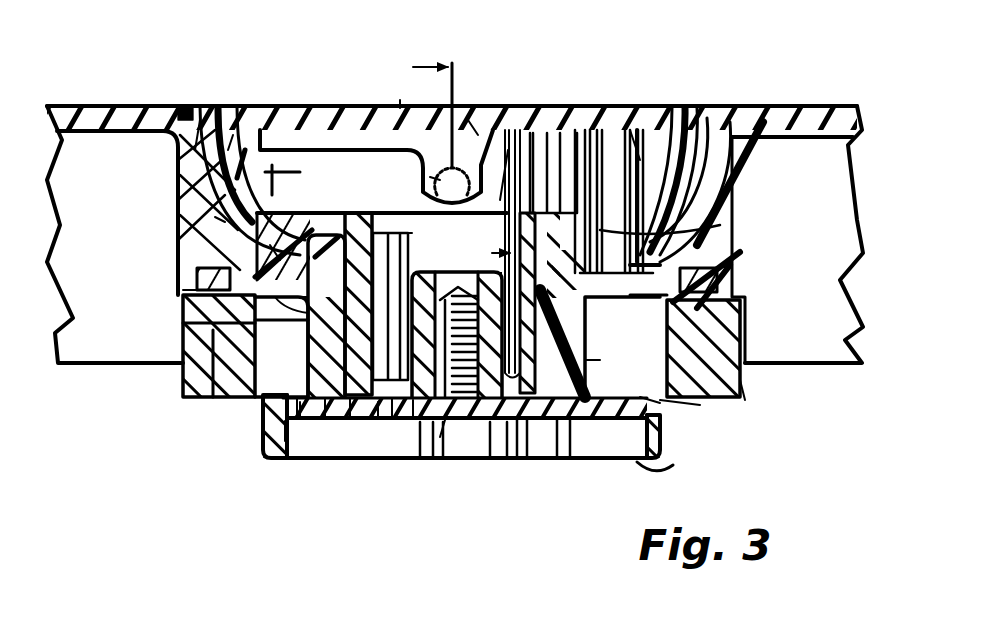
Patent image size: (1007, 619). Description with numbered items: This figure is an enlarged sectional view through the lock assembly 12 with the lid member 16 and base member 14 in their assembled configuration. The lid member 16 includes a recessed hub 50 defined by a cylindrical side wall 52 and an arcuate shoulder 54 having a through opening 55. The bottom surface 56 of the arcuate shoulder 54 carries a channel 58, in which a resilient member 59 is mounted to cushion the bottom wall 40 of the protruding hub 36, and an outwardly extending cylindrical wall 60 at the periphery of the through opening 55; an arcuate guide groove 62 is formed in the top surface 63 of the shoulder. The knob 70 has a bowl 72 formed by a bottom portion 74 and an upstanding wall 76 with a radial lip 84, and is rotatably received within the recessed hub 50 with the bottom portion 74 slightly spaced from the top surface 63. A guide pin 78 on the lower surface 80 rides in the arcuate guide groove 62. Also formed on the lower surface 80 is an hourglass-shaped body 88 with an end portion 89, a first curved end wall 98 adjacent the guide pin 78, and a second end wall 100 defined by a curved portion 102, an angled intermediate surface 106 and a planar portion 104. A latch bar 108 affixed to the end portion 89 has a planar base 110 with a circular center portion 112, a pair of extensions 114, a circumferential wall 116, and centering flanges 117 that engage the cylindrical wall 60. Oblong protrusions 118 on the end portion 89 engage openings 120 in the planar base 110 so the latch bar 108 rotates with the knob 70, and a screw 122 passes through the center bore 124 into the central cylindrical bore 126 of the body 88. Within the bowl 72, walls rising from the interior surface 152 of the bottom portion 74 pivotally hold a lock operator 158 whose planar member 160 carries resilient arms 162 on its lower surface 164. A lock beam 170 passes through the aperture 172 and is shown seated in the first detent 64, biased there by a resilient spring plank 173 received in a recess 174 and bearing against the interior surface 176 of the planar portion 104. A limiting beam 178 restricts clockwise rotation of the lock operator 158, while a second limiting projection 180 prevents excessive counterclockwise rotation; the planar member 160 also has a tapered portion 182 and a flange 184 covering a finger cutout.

The lock assembly 12 is at (459, 206).
The base member 14 is at (740, 380).
The lid member 16 is at (841, 107).
The protruding hub 36 is at (180, 388).
The bottom wall 40 is at (248, 384).
The recessed hub 50 is at (200, 120).
The cylindrical side wall 52 is at (230, 162).
The arcuate shoulder 54 is at (350, 217).
The through opening 55 is at (390, 252).
The bottom surface 56 is at (258, 357).
The channel 58 is at (197, 272).
The resilient member 59 is at (190, 288).
The cylindrical wall 60 is at (700, 407).
The arcuate guide groove 62 is at (265, 297).
The top surface 63 is at (380, 233).
The first detent 64 is at (660, 232).
The knob 70 is at (670, 100).
The bowl 72 is at (233, 135).
The bottom portion 74 is at (317, 217).
The upstanding wall 76 is at (245, 150).
The guide pin 78 is at (275, 253).
The lower surface 80 is at (215, 217).
The radial lip 84 is at (207, 106).
The body 88 is at (325, 402).
The end portion 89 is at (350, 402).
The first curved end wall 98 is at (297, 418).
The second end wall 100 is at (712, 262).
The curved portion 102 is at (687, 250).
The planar portion 104 is at (737, 310).
The angled intermediate surface 106 is at (585, 322).
The latch bar 108 is at (672, 433).
The planar base 110 is at (682, 464).
The circular center portion 112 is at (392, 402).
The extensions 114 is at (285, 441).
The circumferential wall 116 is at (300, 402).
The centering flanges 117 is at (660, 403).
The protrusions 118 is at (378, 402).
The openings 120 is at (365, 402).
The screw 122 is at (462, 420).
The center bore 124 is at (413, 402).
The central cylindrical bore 126 is at (440, 420).
The interior surface 152 is at (283, 197).
The lock operator 158 is at (405, 100).
The planar member 160 is at (468, 117).
The resilient arms 162 is at (430, 178).
The lower surface 164 is at (276, 118).
The lock beam 170 is at (650, 210).
The aperture 172 is at (660, 190).
The resilient spring plank 173 is at (510, 148).
The recess 174 is at (717, 296).
The interior surface 176 is at (593, 363).
The limiting beam 178 is at (660, 168).
The second limiting projection 180 is at (257, 190).
The tapered portion 182 is at (637, 125).
The flange 184 is at (273, 137).